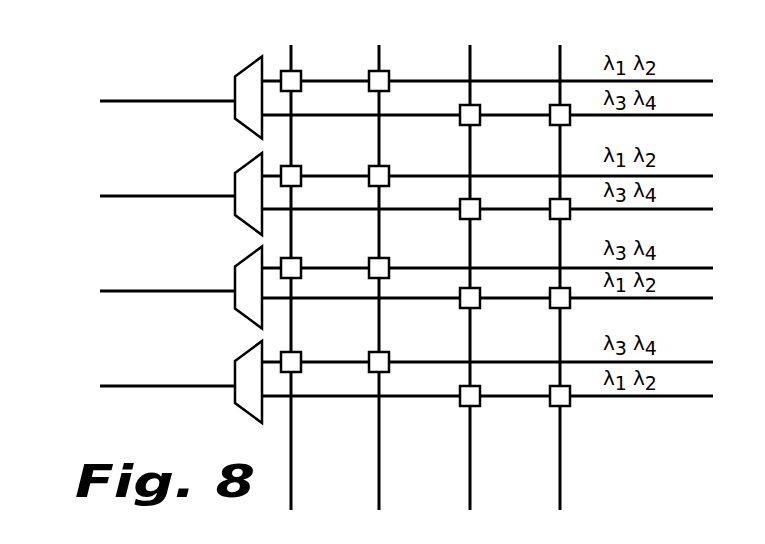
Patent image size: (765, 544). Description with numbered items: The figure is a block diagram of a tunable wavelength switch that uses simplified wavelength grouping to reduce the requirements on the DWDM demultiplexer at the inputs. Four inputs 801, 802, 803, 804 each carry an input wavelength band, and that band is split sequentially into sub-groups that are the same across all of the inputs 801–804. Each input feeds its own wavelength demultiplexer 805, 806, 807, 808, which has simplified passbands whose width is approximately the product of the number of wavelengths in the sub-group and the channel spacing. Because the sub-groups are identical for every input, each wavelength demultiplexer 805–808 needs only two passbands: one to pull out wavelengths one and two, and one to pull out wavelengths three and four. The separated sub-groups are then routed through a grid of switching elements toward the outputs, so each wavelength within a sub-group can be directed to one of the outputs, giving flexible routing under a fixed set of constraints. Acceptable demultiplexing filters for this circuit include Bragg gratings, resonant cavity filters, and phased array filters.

The input 801 is at (125, 100).
The input 802 is at (125, 195).
The input 803 is at (125, 290).
The input 804 is at (122, 382).
The wavelength demultiplexer 805 is at (247, 65).
The wavelength demultiplexer 806 is at (245, 166).
The wavelength demultiplexer 807 is at (245, 259).
The wavelength demultiplexer 808 is at (245, 354).